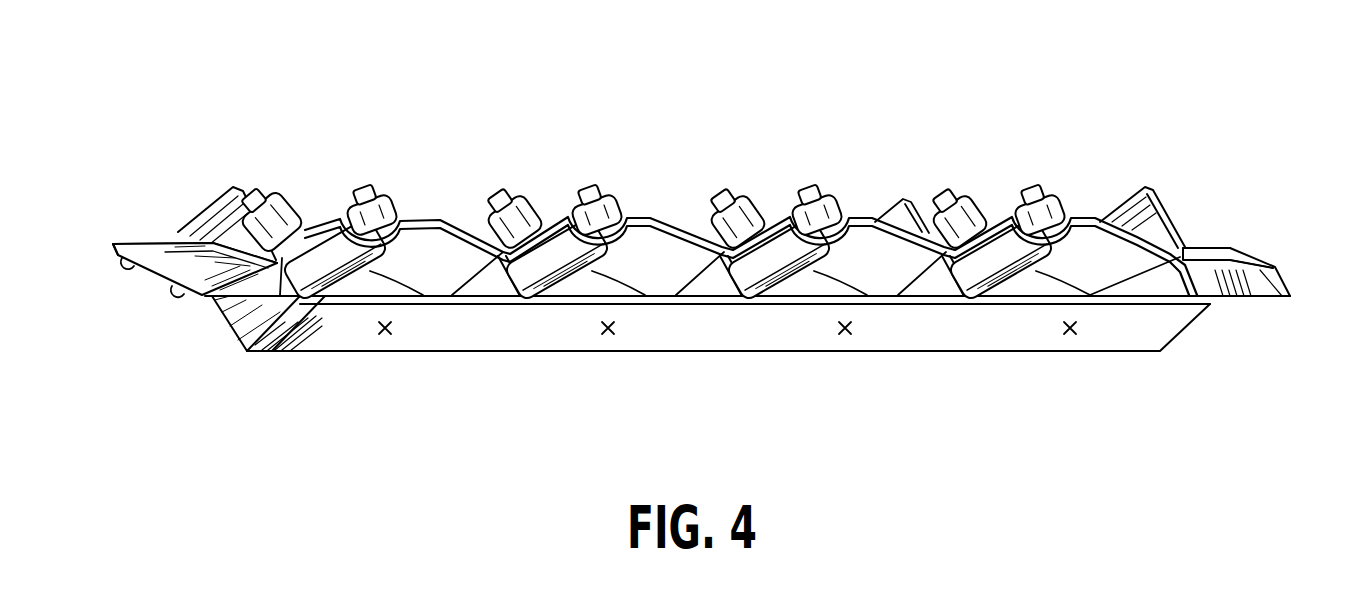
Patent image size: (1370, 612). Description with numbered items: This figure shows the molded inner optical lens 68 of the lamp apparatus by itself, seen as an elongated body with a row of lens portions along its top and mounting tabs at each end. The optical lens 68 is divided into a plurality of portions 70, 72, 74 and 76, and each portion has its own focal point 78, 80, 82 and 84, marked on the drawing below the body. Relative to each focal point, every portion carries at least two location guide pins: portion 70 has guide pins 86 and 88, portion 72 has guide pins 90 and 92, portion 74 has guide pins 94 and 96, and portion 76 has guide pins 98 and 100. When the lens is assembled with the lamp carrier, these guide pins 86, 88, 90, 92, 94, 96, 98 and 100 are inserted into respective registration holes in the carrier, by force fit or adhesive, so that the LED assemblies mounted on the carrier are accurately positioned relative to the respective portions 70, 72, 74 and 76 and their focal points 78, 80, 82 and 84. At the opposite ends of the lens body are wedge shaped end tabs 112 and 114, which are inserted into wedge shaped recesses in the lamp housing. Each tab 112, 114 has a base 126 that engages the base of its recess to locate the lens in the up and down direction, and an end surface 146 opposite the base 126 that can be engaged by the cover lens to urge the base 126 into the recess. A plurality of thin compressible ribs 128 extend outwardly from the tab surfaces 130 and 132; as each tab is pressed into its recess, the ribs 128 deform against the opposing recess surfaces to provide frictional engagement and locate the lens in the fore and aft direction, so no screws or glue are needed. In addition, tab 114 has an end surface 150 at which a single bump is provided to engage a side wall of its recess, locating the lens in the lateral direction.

The optical lens 68 is at (652, 68).
The portion 70 is at (993, 273).
The portion 72 is at (772, 278).
The portion 74 is at (543, 278).
The portion 76 is at (322, 278).
The focal point 78 is at (1073, 337).
The focal point 80 is at (852, 340).
The focal point 82 is at (618, 337).
The focal point 84 is at (393, 337).
The guide pin 86 is at (1031, 184).
The guide pin 88 is at (948, 187).
The guide pin 90 is at (803, 186).
The guide pin 92 is at (718, 188).
The guide pin 94 is at (585, 186).
The guide pin 96 is at (497, 186).
The guide pin 98 is at (352, 188).
The guide pin 100 is at (268, 186).
The wedge shaped end tab 112 is at (1292, 268).
The wedge shaped end tab 114 is at (155, 287).
The base 126 is at (150, 242).
The rib 128 is at (125, 268).
The surface 130 is at (1242, 262).
The surface 132 is at (1245, 297).
The end surface 146 is at (203, 296).
The end surface 150 is at (114, 247).